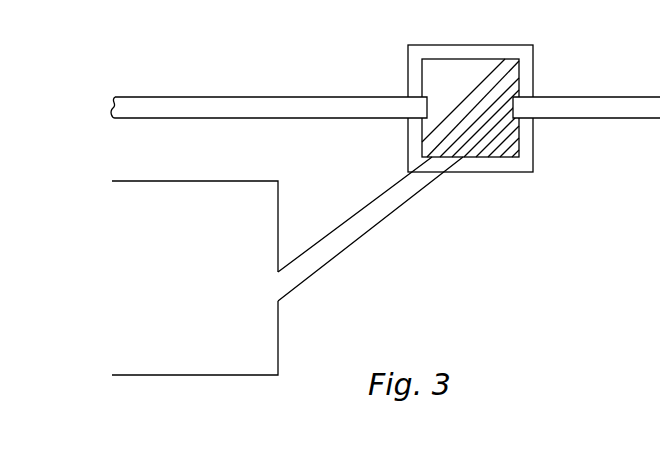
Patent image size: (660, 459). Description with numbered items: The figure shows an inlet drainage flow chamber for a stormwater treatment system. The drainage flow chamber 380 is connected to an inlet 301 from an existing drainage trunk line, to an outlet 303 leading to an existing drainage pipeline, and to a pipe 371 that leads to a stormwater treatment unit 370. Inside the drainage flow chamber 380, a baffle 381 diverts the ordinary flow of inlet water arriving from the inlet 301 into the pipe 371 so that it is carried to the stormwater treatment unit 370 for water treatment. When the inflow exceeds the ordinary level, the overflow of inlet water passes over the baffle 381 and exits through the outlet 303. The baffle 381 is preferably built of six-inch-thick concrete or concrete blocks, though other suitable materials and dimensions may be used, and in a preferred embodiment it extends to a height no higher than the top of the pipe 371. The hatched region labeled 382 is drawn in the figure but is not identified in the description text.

The inlet 301 is at (619, 97).
The outlet 303 is at (316, 97).
The stormwater treatment unit 370 is at (250, 227).
The pipe 371 is at (347, 248).
The drainage flow chamber 380 is at (533, 54).
The baffle 381 is at (469, 95).
The mirror mount block 382 is at (503, 138).